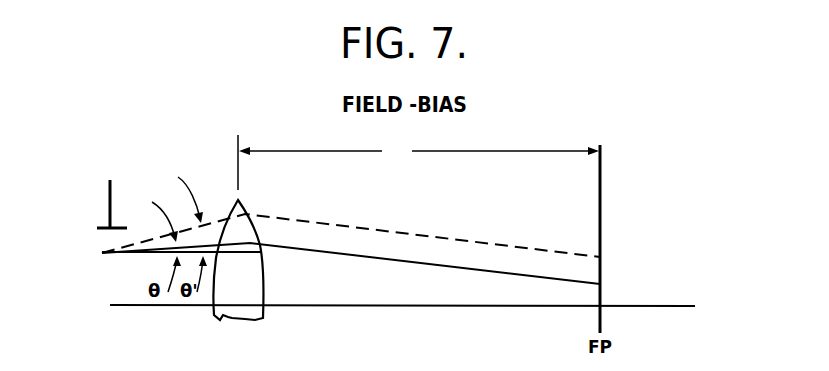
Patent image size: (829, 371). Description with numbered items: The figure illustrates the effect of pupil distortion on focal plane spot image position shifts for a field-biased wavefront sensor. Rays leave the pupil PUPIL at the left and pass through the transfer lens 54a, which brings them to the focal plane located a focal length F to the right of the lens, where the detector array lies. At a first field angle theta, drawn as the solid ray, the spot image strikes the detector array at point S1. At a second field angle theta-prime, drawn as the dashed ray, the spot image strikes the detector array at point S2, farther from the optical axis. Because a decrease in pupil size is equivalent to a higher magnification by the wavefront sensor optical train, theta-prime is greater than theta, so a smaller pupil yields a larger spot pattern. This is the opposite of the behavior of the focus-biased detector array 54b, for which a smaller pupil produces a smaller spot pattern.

The transfer lens 54a is at (241, 206).
The focus-biased detector array 54b is at (597, 317).
The first spot image point S1 is at (367, 267).
The second spot image point S2 is at (367, 240).
The focal length F is at (418, 162).
The pupil PUPIL is at (112, 190).